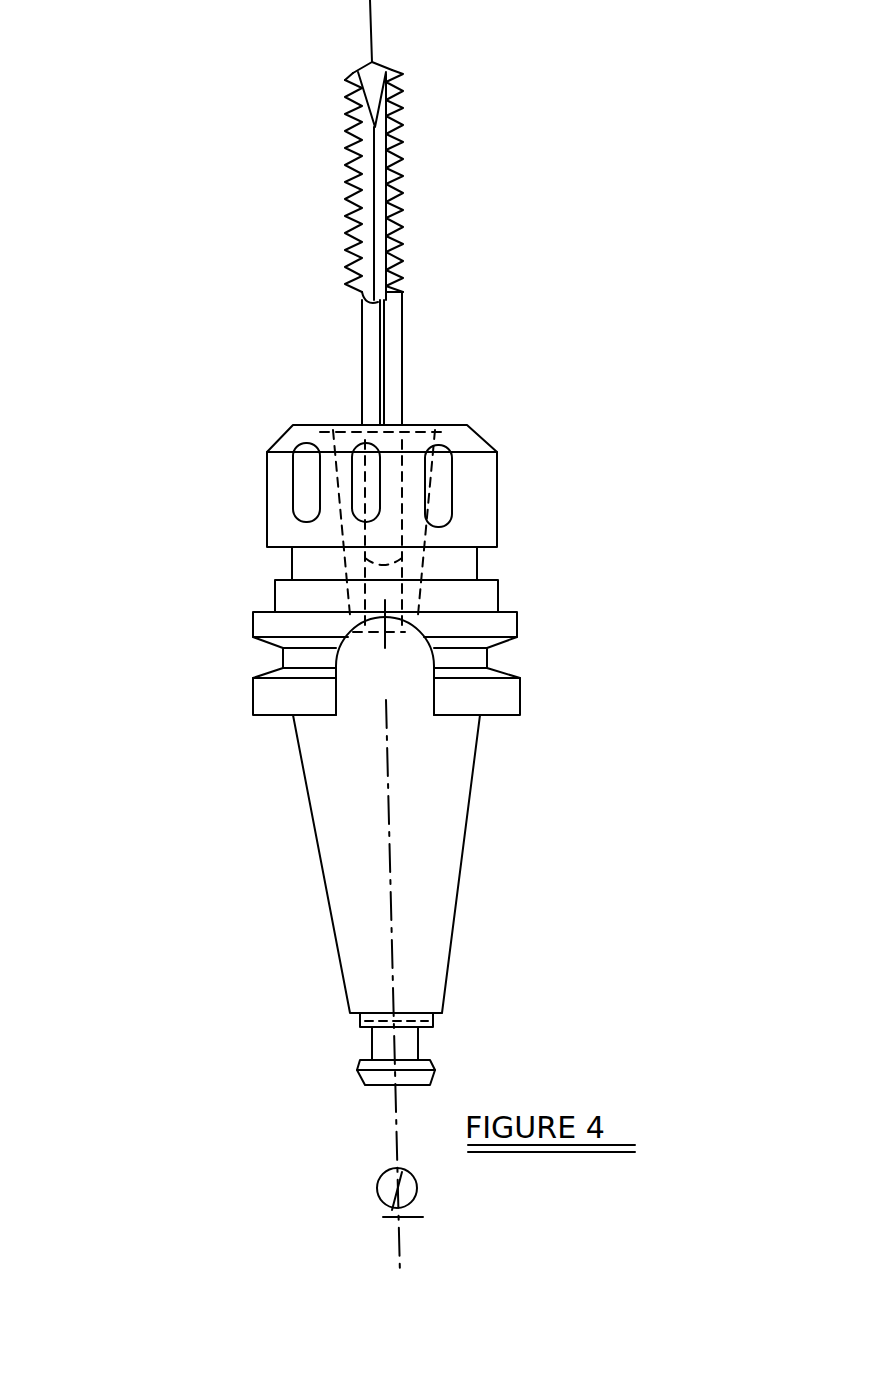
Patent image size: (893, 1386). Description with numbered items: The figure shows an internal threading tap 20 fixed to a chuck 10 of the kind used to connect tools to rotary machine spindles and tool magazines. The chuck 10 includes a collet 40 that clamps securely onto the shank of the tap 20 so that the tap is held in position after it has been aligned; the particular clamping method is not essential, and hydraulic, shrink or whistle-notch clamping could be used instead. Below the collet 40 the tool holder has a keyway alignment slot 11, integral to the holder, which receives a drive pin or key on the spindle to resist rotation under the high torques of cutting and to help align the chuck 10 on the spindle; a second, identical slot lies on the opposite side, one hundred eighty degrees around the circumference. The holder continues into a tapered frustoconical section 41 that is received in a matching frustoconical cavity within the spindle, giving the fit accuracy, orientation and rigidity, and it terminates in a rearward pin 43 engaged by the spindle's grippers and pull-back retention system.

The chuck 10 is at (157, 537).
The internal threading tap 20 is at (372, 187).
The collet 40 is at (412, 467).
The keyway alignment slot 11 is at (367, 682).
The tapered frustoconical section 41 is at (422, 855).
The rearward pin 43 is at (418, 1035).